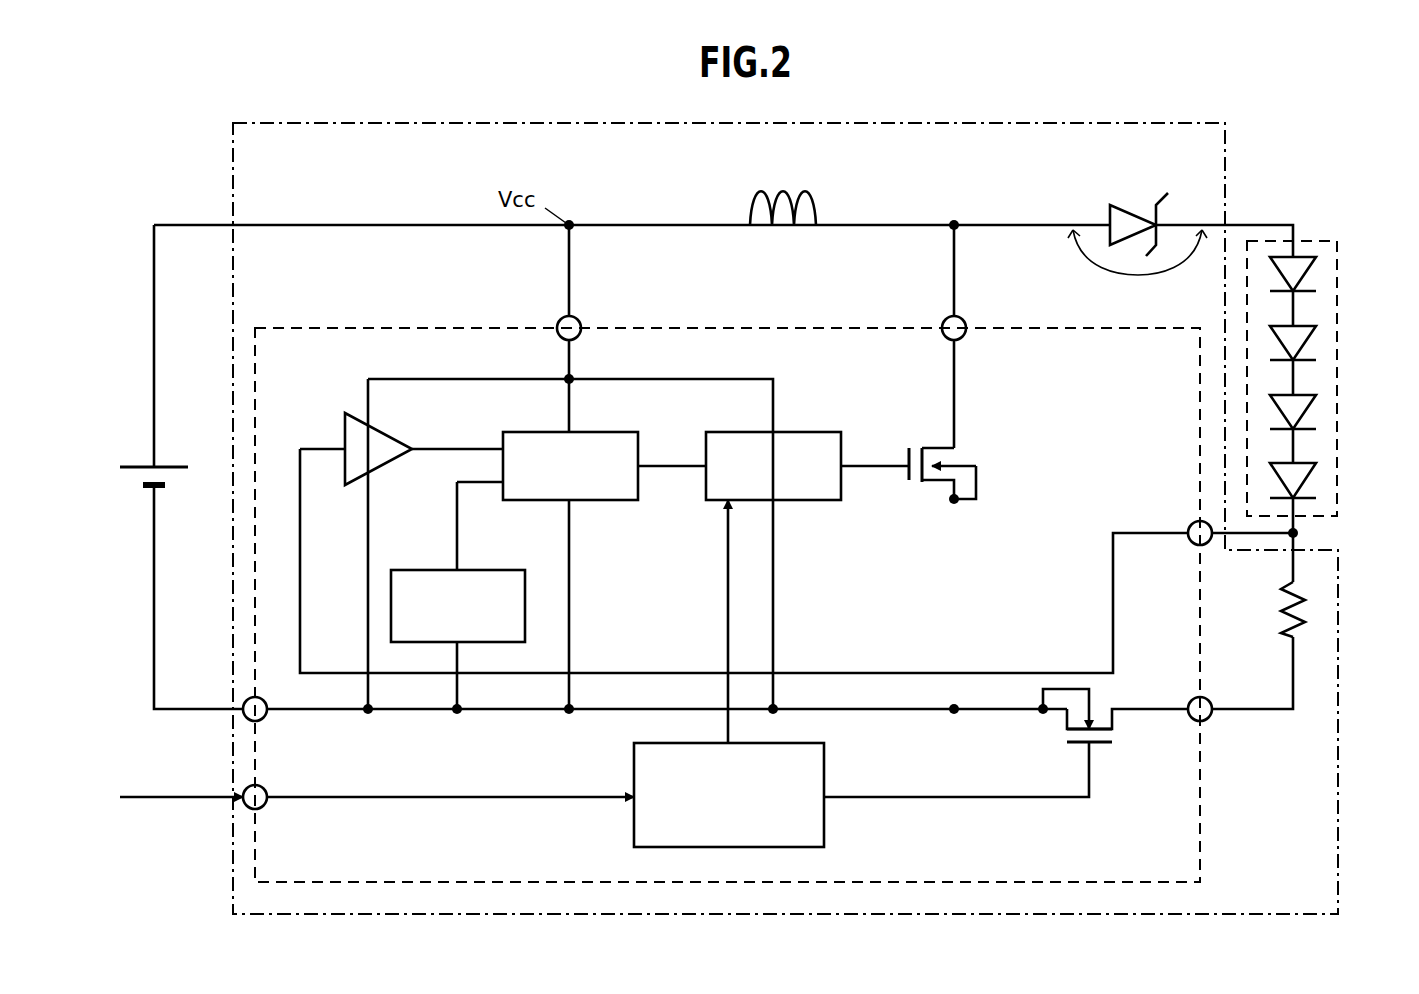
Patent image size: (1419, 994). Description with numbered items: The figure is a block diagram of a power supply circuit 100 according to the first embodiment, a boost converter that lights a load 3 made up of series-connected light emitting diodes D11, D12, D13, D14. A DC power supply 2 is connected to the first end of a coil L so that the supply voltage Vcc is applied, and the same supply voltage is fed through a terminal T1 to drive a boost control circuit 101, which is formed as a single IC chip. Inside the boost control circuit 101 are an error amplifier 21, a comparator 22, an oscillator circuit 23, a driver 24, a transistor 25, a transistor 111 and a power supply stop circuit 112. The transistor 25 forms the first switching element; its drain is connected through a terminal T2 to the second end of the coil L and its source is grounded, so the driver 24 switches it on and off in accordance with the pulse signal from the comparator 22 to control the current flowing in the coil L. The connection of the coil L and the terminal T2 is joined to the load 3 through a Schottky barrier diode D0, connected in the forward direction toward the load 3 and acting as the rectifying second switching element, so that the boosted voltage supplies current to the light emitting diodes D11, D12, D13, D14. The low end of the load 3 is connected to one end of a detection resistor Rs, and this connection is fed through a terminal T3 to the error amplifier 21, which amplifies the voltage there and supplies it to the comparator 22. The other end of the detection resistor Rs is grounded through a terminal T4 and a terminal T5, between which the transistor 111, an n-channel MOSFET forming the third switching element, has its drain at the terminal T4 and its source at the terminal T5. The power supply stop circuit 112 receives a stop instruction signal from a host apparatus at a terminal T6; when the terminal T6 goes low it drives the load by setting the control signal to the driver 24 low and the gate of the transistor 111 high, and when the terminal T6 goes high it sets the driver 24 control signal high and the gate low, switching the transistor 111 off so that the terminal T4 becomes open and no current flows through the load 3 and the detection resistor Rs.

The power supply circuit 100 is at (248, 122).
The boost control circuit 101 is at (355, 328).
The DC power supply 2 is at (133, 467).
The load 3 is at (1328, 371).
The error amplifier 21 is at (345, 420).
The comparator 22 is at (522, 432).
The oscillator circuit 23 is at (432, 570).
The driver 24 is at (748, 432).
The transistor 25 is at (940, 444).
The transistor 111 is at (1067, 721).
The power supply stop circuit 112 is at (825, 776).
The coil L is at (783, 190).
The Schottky barrier diode D0 is at (1137, 220).
The detection resistor Rs is at (1312, 600).
The light emitting diode D11 is at (1308, 276).
The light emitting diode D12 is at (1308, 345).
The light emitting diode D13 is at (1308, 414).
The light emitting diode D14 is at (1308, 482).
The terminal T1 is at (555, 316).
The terminal T2 is at (939, 316).
The terminal T3 is at (1210, 555).
The terminal T4 is at (1215, 721).
The terminal T5 is at (224, 697).
The terminal T6 is at (224, 785).